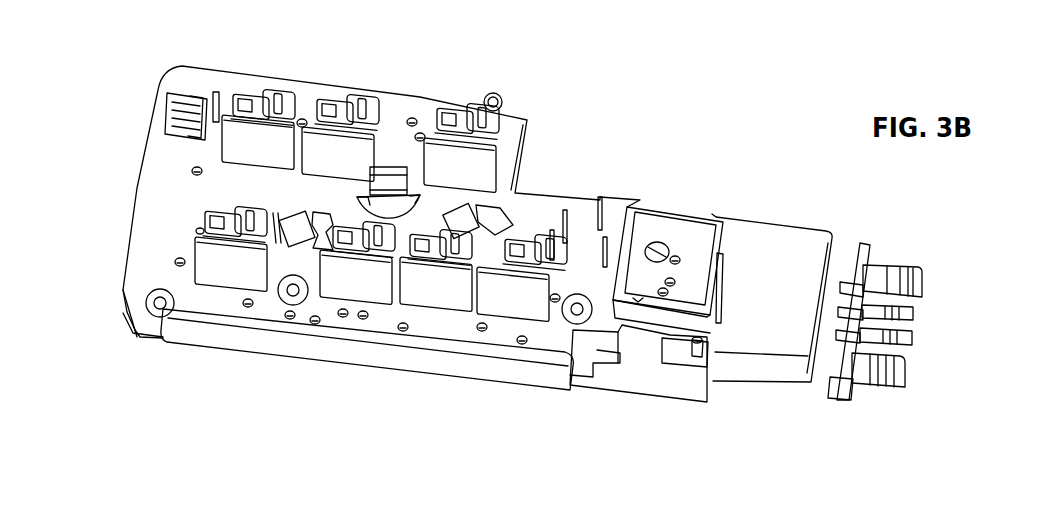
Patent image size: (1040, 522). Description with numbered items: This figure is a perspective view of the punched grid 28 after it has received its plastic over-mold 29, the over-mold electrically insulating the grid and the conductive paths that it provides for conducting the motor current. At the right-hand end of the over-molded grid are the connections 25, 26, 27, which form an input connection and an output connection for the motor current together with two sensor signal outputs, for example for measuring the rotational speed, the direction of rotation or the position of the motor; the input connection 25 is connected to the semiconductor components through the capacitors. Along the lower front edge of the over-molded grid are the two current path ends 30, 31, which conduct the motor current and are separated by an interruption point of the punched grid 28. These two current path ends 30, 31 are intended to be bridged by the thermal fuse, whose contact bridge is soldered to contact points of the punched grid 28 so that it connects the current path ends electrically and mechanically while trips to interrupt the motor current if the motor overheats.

The input connection 25 is at (905, 372).
The connection 26 is at (922, 283).
The connection 27 is at (912, 338).
The punched grid 28 is at (177, 107).
The plastic over-mold 29 is at (392, 108).
The current path end 30 is at (678, 358).
The current path end 31 is at (600, 352).